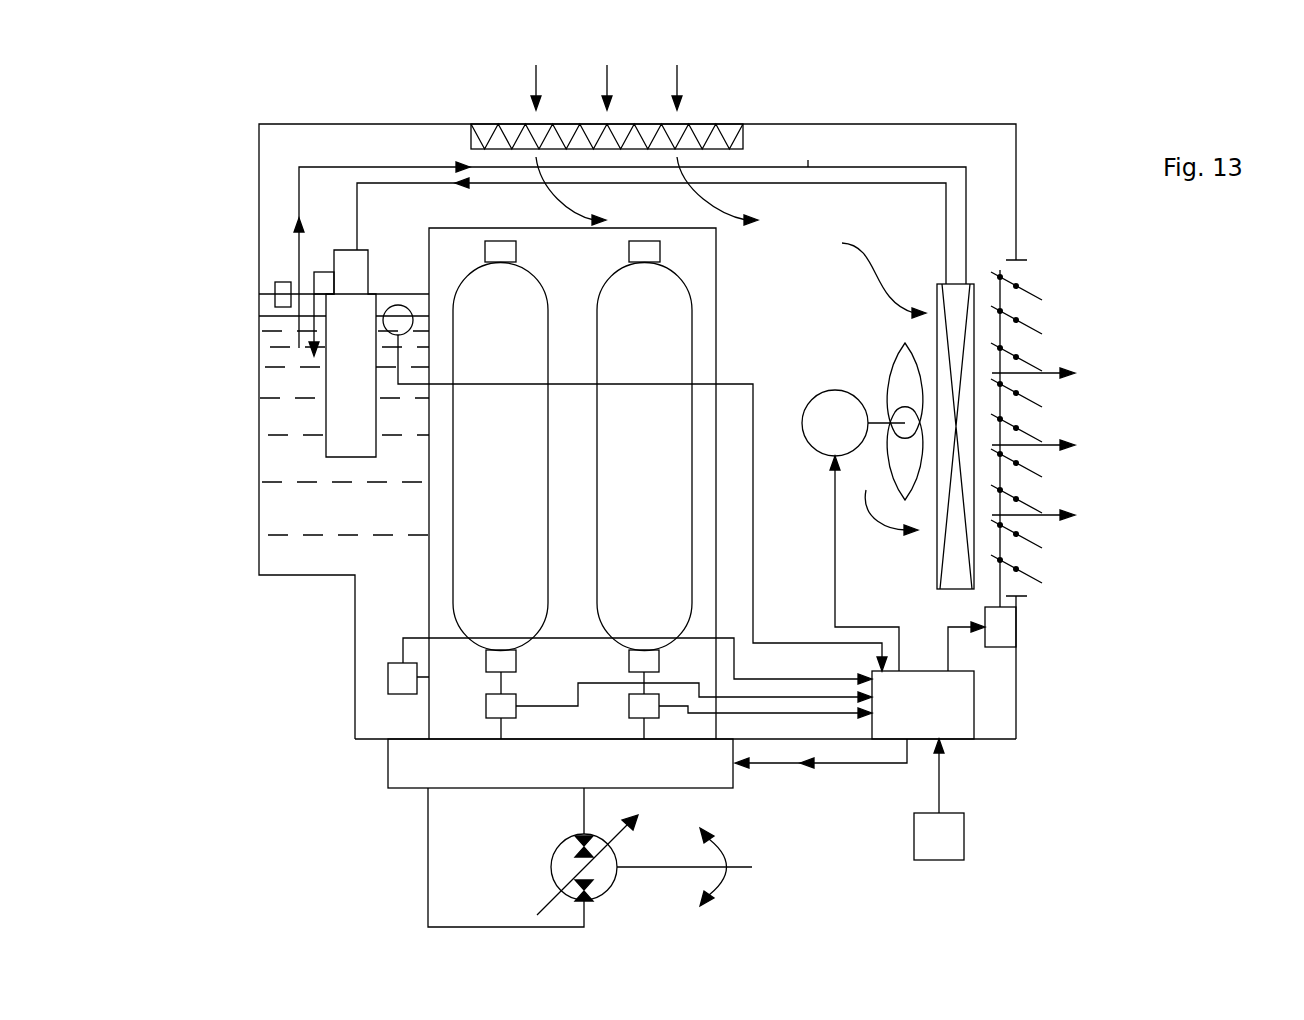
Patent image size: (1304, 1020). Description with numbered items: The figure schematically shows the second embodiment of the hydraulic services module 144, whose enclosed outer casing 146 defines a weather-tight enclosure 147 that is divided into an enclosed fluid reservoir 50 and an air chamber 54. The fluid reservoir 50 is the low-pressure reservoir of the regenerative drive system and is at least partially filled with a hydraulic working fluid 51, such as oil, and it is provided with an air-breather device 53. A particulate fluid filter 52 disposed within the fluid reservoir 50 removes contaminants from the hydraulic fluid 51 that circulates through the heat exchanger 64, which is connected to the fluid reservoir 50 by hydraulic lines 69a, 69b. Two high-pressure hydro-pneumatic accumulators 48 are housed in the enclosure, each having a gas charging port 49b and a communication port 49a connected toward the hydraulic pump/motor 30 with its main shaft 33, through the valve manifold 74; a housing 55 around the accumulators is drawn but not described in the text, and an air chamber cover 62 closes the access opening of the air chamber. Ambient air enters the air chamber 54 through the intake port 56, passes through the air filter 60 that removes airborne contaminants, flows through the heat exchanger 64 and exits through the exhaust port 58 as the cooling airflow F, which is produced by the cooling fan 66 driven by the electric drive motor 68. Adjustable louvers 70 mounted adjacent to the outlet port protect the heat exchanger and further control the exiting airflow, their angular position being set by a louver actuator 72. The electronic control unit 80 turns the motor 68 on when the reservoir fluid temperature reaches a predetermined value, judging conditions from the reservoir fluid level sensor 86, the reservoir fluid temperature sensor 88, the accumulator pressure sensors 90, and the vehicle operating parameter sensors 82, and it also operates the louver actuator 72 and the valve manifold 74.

The enclosure 147 is at (283, 138).
The outer casing 146 is at (394, 124).
The hydraulic services module 144 is at (246, 202).
The air filter element 60 is at (585, 130).
The intake port 56 is at (628, 122).
The hydraulic line 69a is at (808, 167).
The hydraulic line 69b is at (882, 183).
The air-breather device 53 is at (275, 288).
The particulate fluid filter 52 is at (326, 391).
The hydraulic working fluid 51 is at (270, 473).
The fluid reservoir 50 is at (353, 529).
The reservoir fluid level sensor 86 is at (398, 305).
The gas charging port 49b is at (485, 250).
The communication port 49a is at (629, 655).
The tank housing 55 is at (581, 332).
The high-pressure hydraulic accumulator 48 is at (510, 464).
The air chamber 54 is at (843, 332).
The drive motor 68 is at (836, 390).
The cooling fan 66 is at (906, 468).
The heat exchanger 64 is at (975, 303).
The exhaust port 58 is at (1025, 425).
The cooling airflow F is at (1048, 513).
The louvers 70 is at (1028, 535).
The louver actuator 72 is at (1003, 632).
The electronic control unit 80 is at (962, 714).
The vehicle operating parameter sensors 82 is at (964, 838).
The air chamber cover 62 is at (430, 580).
The reservoir fluid temperature sensor 88 is at (398, 680).
The accumulator pressure sensor 90 is at (486, 706).
The valve manifold 74 is at (398, 763).
The hydraulic pump/motor 30 is at (551, 875).
The main shaft 33 is at (655, 867).